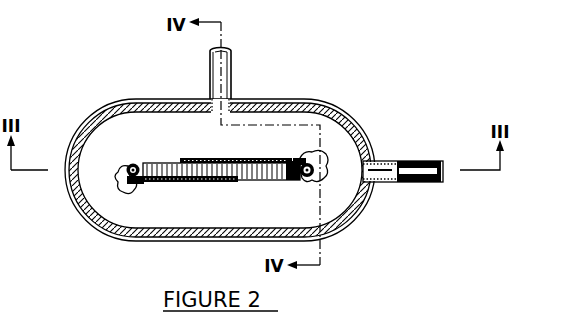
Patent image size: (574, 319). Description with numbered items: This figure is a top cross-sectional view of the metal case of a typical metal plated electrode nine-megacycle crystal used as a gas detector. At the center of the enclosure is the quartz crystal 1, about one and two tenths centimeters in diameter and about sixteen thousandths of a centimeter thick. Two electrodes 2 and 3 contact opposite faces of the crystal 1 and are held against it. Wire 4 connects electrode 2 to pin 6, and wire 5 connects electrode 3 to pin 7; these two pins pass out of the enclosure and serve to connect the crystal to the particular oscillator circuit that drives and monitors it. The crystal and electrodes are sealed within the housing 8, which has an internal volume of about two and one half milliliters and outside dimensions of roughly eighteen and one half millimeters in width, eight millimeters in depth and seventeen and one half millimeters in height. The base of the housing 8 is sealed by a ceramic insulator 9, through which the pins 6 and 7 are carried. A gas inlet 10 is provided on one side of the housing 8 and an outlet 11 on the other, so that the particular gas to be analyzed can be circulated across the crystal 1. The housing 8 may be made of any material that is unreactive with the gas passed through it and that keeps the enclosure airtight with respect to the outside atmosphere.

The crystal 1 is at (163, 163).
The electrode 2 is at (208, 182).
The electrode 3 is at (232, 159).
The wire 4 is at (118, 184).
The wire 5 is at (327, 167).
The pin 6 is at (131, 163).
The pin 7 is at (308, 178).
The housing 8 is at (336, 115).
The ceramic insulator 9 is at (363, 132).
The gas inlet 10 is at (425, 183).
The outlet 11 is at (231, 68).